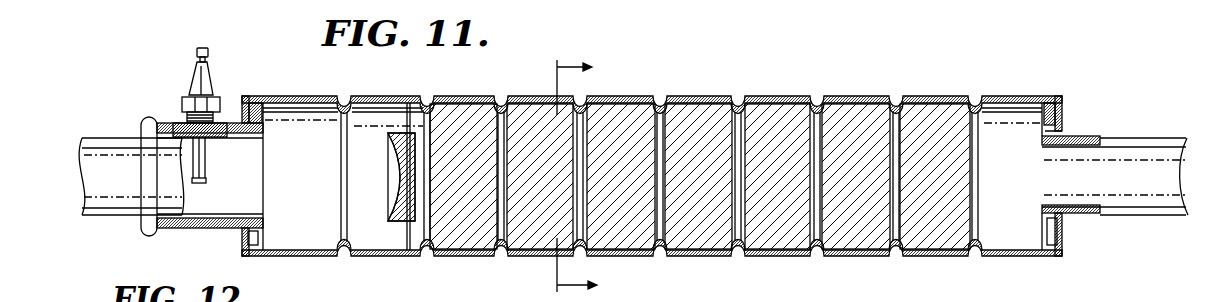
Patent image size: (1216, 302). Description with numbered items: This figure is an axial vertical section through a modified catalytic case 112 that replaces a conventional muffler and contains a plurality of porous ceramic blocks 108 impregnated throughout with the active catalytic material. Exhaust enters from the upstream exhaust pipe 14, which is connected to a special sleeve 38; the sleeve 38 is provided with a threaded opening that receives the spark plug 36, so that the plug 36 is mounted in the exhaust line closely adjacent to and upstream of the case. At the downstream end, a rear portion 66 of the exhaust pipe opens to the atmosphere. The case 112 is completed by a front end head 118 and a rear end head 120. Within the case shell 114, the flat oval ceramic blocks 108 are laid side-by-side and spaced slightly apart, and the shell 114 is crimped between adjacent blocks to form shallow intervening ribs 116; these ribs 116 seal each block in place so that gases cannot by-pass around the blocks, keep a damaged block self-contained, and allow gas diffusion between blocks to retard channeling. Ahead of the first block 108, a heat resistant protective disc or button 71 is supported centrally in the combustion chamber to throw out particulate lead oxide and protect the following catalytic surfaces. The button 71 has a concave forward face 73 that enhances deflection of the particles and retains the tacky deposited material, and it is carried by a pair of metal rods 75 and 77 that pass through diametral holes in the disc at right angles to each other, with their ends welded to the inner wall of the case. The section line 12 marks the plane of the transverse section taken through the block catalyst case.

The section line 12- 12 is at (582, 172).
The exhaust pipe 14 is at (96, 190).
The spark plug 36 is at (182, 95).
The sleeve 38 is at (199, 218).
The rear portion of the exhaust pipe 66 is at (1143, 147).
The protective disc or button 71 is at (390, 131).
The concave forward face 73 is at (401, 156).
The metal rod 75 is at (407, 175).
The metal rod 77 is at (406, 232).
The ceramic blocks 108 is at (526, 110).
The catalyst case 112 is at (883, 94).
The case shell 114 is at (947, 98).
The ribs 116 is at (343, 256).
The front end head 118 is at (262, 116).
The rear end head 120 is at (1063, 119).